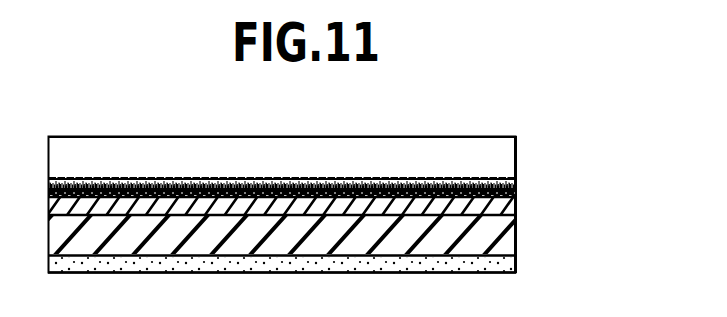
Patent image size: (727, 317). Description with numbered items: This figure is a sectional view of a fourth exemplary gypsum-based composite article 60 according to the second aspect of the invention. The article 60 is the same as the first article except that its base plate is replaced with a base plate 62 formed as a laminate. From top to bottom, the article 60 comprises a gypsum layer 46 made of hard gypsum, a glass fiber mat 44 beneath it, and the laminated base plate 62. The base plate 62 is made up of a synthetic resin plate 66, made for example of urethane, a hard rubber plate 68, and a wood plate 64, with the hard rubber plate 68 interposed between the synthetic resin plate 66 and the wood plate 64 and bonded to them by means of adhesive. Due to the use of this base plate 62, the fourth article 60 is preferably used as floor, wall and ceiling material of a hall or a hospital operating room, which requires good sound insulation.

The fourth exemplary gypsum-based composite article 60 is at (529, 121).
The gypsum layer 46 is at (393, 152).
The glass fiber mat 44 is at (480, 182).
The base plate 62 is at (538, 222).
The synthetic resin plate 66 is at (518, 206).
The hard rubber plate 68 is at (517, 240).
The wood plate 64 is at (517, 265).